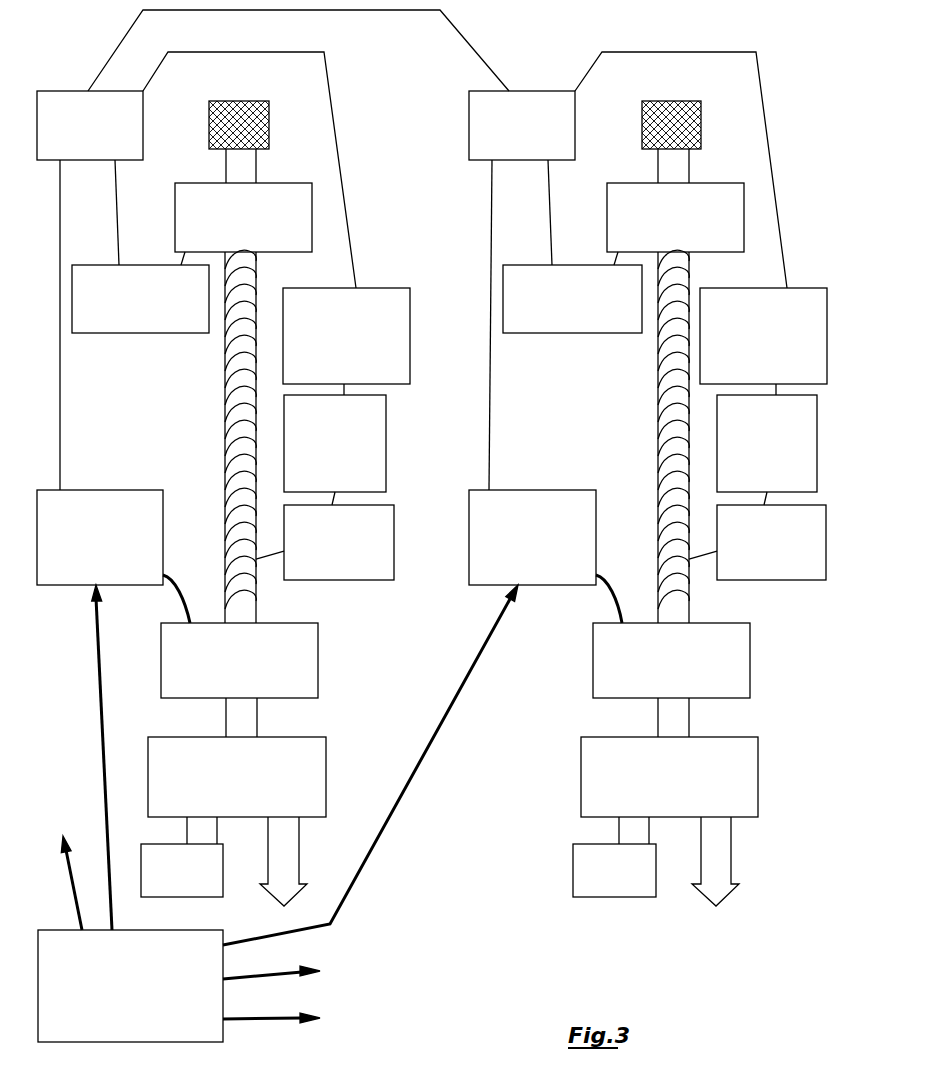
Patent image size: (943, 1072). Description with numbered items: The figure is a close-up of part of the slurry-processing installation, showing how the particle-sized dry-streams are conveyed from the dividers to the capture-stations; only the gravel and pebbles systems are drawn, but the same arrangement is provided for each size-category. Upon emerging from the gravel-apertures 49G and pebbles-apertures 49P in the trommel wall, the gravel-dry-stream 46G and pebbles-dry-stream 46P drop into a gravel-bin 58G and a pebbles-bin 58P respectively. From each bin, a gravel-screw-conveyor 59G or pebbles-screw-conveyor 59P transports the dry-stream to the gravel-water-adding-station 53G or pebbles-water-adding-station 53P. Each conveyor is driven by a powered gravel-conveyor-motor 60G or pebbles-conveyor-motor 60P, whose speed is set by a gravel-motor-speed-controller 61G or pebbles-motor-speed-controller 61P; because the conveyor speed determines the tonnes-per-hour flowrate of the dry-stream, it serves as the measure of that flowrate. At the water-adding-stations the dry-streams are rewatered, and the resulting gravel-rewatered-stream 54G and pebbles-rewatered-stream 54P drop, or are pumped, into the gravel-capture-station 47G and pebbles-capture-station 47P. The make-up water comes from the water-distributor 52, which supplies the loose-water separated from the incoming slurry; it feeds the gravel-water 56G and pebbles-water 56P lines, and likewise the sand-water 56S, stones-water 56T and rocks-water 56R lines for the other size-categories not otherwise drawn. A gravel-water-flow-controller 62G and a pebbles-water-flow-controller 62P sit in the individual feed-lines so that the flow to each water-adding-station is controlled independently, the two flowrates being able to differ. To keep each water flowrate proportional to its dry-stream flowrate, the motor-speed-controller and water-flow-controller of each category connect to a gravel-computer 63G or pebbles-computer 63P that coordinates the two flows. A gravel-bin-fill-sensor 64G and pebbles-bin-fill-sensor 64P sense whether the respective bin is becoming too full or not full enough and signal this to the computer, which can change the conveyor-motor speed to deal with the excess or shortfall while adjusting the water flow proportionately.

The water-distributor 52 is at (130, 986).
The gravel-water 56G is at (100, 752).
The pebbles-water 56P is at (418, 773).
The sand-water 56S is at (69, 871).
The stones-water 56T is at (295, 979).
The rocks-water 56R is at (295, 1022).
The gravel-computer 63G is at (69, 141).
The pebbles-computer 63P is at (502, 141).
The gravel-bin-fill-sensor 64G is at (119, 313).
The pebbles-bin-fill-sensor 64P is at (551, 313).
The gravel-water-flow-controller 62G is at (79, 551).
The pebbles-water-flow-controller 62P is at (513, 551).
The gravel-motor-speed-controller 61G is at (325, 349).
The pebbles-motor-speed-controller 61P is at (758, 349).
The gravel-conveyor-motor 60G is at (315, 456).
The pebbles-conveyor-motor 60P is at (747, 456).
The gravel-screw-conveyor 59G is at (318, 556).
The pebbles-screw-conveyor 59P is at (751, 556).
The gravel-bin 58G is at (222, 228).
The pebbles-bin 58P is at (656, 228).
The gravel-apertures 49G is at (253, 126).
The pebbles-apertures 49P is at (686, 126).
The gravel-dry-stream 46G is at (245, 166).
The pebbles-dry-stream 46P is at (678, 163).
The gravel-water-adding-station 53G is at (226, 678).
The pebbles-water-adding-station 53P is at (651, 678).
The gravel-rewatered-stream 54G is at (242, 715).
The pebbles-rewatered-stream 54P is at (674, 715).
The gravel-capture-station 47G is at (223, 796).
The pebbles-capture-station 47P is at (649, 796).